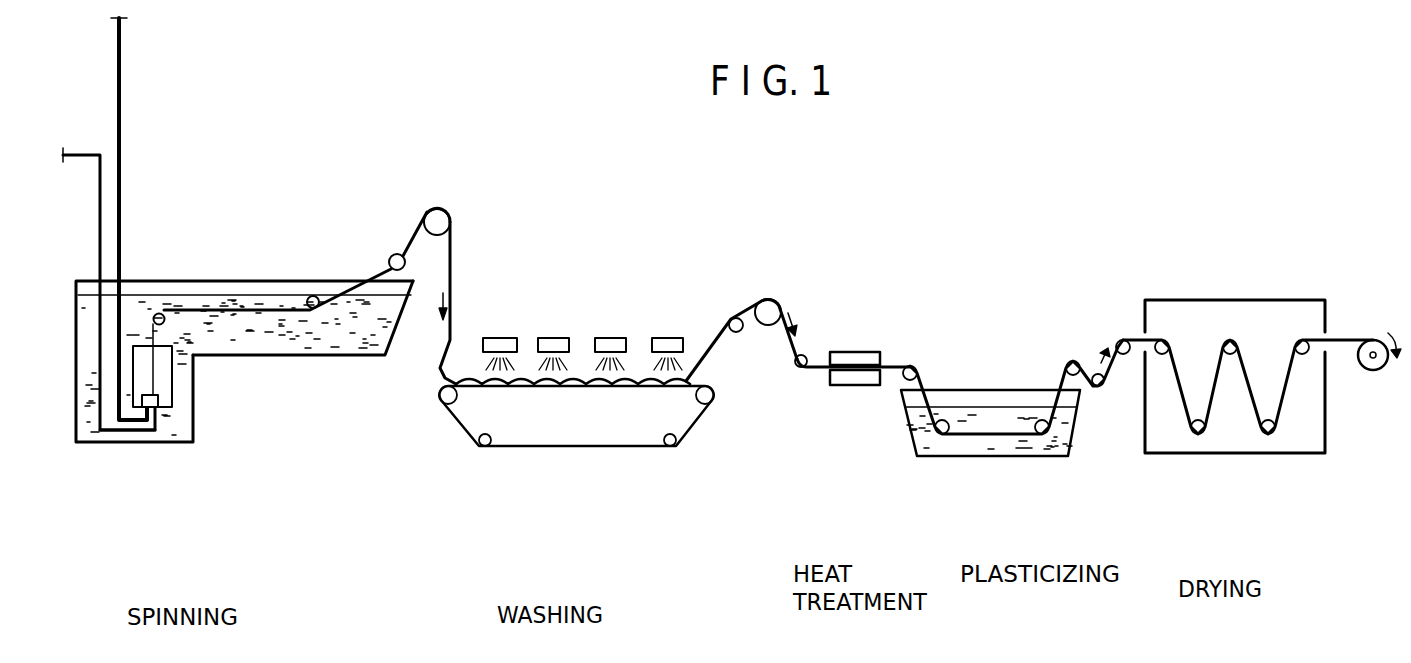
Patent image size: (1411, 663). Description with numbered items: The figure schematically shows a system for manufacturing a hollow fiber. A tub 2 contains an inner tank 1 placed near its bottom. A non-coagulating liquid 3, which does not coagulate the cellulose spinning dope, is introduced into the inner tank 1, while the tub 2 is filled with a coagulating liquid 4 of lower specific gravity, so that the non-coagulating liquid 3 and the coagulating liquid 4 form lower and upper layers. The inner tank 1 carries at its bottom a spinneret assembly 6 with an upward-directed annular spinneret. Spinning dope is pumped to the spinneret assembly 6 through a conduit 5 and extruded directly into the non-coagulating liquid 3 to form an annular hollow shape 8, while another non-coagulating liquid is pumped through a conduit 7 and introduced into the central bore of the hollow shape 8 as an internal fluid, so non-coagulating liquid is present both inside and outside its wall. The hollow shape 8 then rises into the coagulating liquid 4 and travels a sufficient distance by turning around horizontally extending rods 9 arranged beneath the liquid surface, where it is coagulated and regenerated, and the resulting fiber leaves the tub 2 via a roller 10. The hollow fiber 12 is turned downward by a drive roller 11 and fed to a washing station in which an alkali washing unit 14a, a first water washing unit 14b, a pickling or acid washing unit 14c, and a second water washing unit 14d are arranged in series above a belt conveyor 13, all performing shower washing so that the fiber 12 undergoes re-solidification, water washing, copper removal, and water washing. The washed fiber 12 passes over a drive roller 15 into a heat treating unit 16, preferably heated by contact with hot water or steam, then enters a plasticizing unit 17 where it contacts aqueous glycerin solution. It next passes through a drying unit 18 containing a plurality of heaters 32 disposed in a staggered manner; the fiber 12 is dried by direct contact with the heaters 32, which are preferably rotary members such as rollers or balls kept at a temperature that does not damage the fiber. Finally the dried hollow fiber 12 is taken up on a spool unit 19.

The inner tank 1 is at (172, 383).
The tub 2 is at (70, 316).
The non-coagulating liquid 3 is at (140, 382).
The coagulating liquid 4 is at (302, 342).
The conduit 5 is at (83, 155).
The spinneret assembly 6 is at (158, 422).
The conduit 7 is at (120, 88).
The hollow shape 8 is at (146, 327).
The horizontally extending rods 9 is at (163, 316).
The roller 10 is at (393, 257).
The drive roller 11 is at (435, 212).
The hollow fiber 12 is at (455, 260).
The belt conveyor 13 is at (568, 388).
The alkali washing unit 14a is at (500, 343).
The first water washing unit 14b is at (553, 343).
The pickling or acid washing unit 14c is at (610, 343).
The second water washing unit 14d is at (668, 343).
The drive roller 15 is at (772, 302).
The heat treating unit 16 is at (843, 387).
The plasticizing unit 17 is at (990, 457).
The drying unit 18 is at (1259, 298).
The spool unit 19 is at (1372, 367).
The heaters 32 is at (1228, 343).